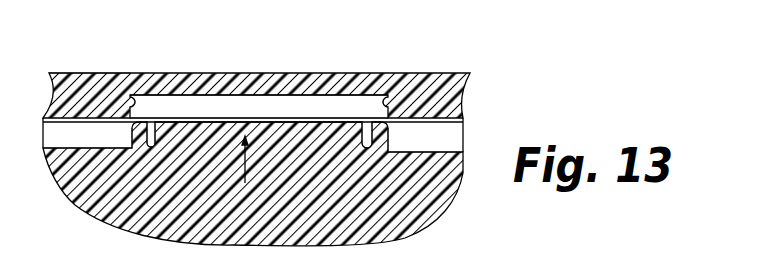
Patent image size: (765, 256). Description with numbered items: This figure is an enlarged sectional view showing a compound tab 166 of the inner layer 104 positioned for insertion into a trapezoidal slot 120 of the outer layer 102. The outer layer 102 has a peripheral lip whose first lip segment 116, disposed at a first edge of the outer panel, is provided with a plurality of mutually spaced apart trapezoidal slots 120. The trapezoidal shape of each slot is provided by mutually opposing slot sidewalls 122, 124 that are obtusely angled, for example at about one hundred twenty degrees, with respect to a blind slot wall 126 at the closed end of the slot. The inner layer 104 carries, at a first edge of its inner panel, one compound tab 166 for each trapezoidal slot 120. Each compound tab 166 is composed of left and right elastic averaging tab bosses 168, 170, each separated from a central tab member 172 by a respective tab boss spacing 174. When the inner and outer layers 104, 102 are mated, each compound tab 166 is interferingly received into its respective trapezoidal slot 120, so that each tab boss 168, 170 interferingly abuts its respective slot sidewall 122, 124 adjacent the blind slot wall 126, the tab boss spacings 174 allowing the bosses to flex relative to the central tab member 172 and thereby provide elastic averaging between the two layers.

The outer layer 102 is at (472, 69).
The inner layer 104 is at (440, 232).
The first lip segment 116 is at (90, 77).
The trapezoidal slot 120 is at (258, 103).
The slot sidewall 122 is at (134, 100).
The slot sidewall 124 is at (385, 95).
The blind slot wall 126 is at (183, 100).
The compound tab 166 is at (268, 114).
The left elastic averaging tab boss 168 is at (132, 133).
The right elastic averaging tab boss 170 is at (388, 135).
The central tab member 172 is at (236, 127).
The tab boss spacing 174 is at (151, 145).